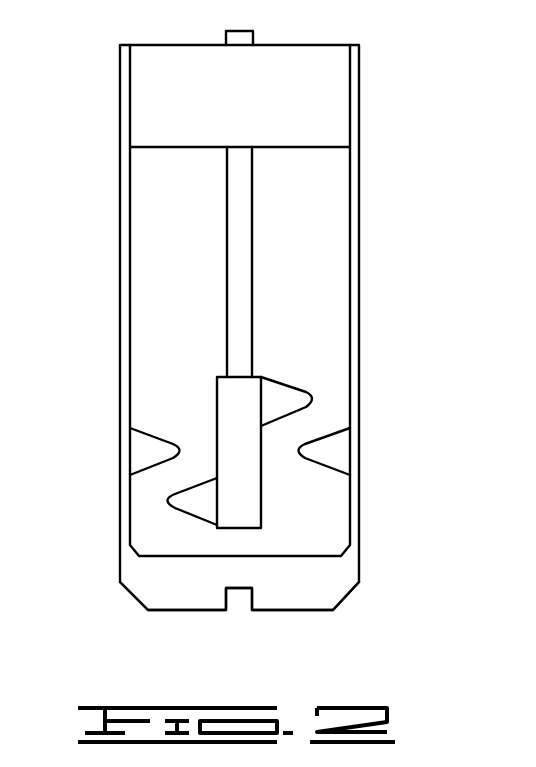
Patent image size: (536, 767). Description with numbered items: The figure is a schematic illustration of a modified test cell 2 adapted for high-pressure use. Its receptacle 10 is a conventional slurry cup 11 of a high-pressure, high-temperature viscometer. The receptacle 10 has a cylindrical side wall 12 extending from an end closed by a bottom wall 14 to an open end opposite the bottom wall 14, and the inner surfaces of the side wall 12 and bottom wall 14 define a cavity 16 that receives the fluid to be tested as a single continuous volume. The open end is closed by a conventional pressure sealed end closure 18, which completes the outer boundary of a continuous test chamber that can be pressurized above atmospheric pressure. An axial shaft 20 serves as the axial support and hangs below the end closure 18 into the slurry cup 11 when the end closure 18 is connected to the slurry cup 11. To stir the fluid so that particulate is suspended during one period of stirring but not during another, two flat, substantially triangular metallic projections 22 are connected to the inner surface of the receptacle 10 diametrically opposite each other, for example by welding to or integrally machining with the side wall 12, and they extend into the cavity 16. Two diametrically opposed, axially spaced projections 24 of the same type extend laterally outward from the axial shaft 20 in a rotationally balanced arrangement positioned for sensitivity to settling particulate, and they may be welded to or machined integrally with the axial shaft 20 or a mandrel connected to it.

The modified test cell 2 is at (404, 174).
The receptacle 10 is at (366, 433).
The slurry cup 11 is at (354, 440).
The cylindrical side wall 12 is at (355, 297).
The bottom wall 14 is at (317, 597).
The cavity 16 is at (167, 276).
The pressure sealed end closure 18 is at (327, 105).
The axial shaft 20 is at (237, 260).
The projections 22 is at (153, 453).
The projections 24 is at (292, 399).